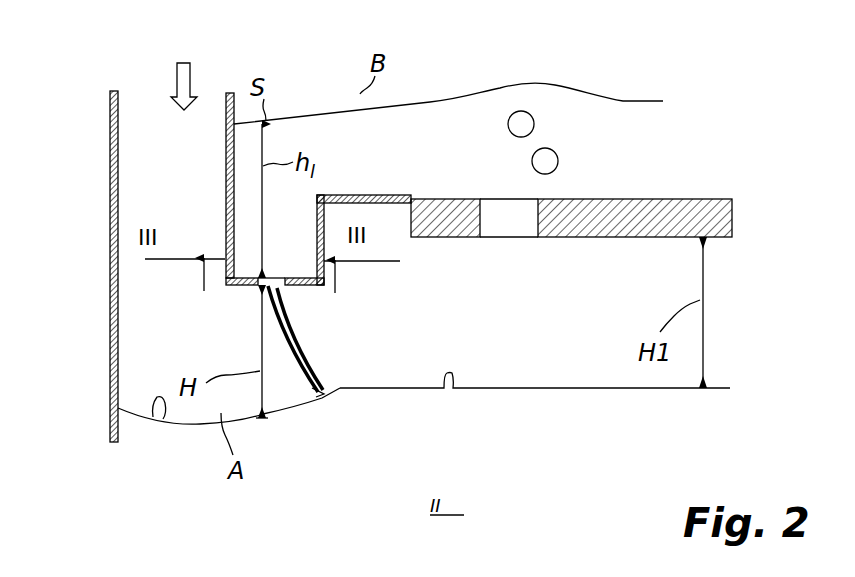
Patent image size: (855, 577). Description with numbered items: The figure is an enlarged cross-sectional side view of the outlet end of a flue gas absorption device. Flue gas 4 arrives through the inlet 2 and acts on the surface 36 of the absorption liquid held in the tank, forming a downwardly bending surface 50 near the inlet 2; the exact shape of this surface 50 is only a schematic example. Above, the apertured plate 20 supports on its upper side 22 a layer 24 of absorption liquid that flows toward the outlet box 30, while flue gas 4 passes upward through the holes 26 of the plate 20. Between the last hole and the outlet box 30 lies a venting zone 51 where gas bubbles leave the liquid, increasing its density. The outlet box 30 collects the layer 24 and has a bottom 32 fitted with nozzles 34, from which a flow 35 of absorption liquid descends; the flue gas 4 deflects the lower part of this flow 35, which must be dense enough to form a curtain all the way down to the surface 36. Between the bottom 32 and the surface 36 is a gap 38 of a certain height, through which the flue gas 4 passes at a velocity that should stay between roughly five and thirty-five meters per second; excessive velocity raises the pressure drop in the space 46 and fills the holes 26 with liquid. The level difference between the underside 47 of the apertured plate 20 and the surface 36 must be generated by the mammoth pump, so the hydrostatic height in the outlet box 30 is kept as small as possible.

The inlet 2 is at (110, 179).
The flue gas 4 is at (177, 73).
The apertured plate 20 is at (598, 237).
The upper side 22 is at (695, 199).
The layer 24 is at (637, 133).
The holes 26 is at (527, 237).
The outlet box 30 is at (226, 273).
The bottom 32 is at (307, 286).
The nozzles 34 is at (258, 286).
The flow 35 is at (299, 348).
The surface 36 is at (446, 389).
The gap 38 is at (240, 351).
The space 46 is at (545, 343).
The underside 47 is at (650, 237).
The downwardly bending surface 50 is at (157, 420).
The venting zone 51 is at (375, 168).